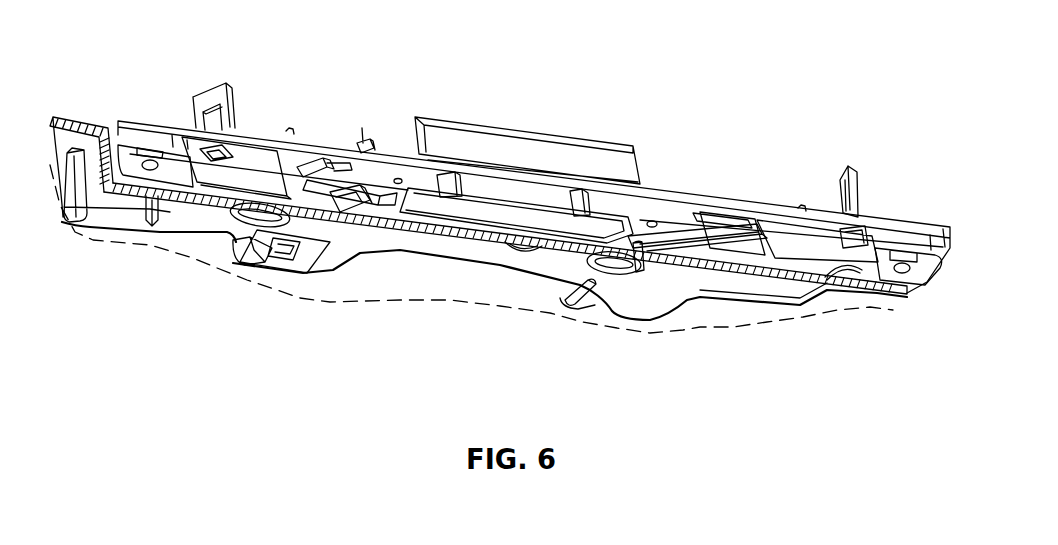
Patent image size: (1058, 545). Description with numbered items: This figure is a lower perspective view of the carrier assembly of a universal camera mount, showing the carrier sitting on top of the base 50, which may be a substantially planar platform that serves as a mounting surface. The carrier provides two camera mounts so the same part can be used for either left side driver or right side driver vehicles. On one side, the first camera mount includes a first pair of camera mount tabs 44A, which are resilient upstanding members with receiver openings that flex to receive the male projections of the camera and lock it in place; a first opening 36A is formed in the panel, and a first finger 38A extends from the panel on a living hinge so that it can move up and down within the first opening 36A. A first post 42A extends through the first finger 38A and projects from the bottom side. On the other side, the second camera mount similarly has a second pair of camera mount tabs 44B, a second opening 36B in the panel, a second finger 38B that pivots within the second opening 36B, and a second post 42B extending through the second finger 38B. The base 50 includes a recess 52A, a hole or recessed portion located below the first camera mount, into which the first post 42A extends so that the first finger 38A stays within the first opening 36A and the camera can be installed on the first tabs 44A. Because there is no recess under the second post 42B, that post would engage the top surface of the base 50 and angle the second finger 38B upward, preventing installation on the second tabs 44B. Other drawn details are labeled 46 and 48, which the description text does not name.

The first opening 36A is at (676, 242).
The second opening 36B is at (350, 163).
The first finger 38A is at (737, 222).
The second finger 38B is at (320, 183).
The first post 42A is at (640, 272).
The second post 42B is at (357, 203).
The first pair of camera mount tabs 44A is at (840, 190).
The second pair of camera mount tabs 44B is at (212, 97).
The mounting hole 46 is at (152, 215).
The raised housing box 48 is at (470, 120).
The base 50 is at (780, 285).
The recess 52A is at (632, 270).